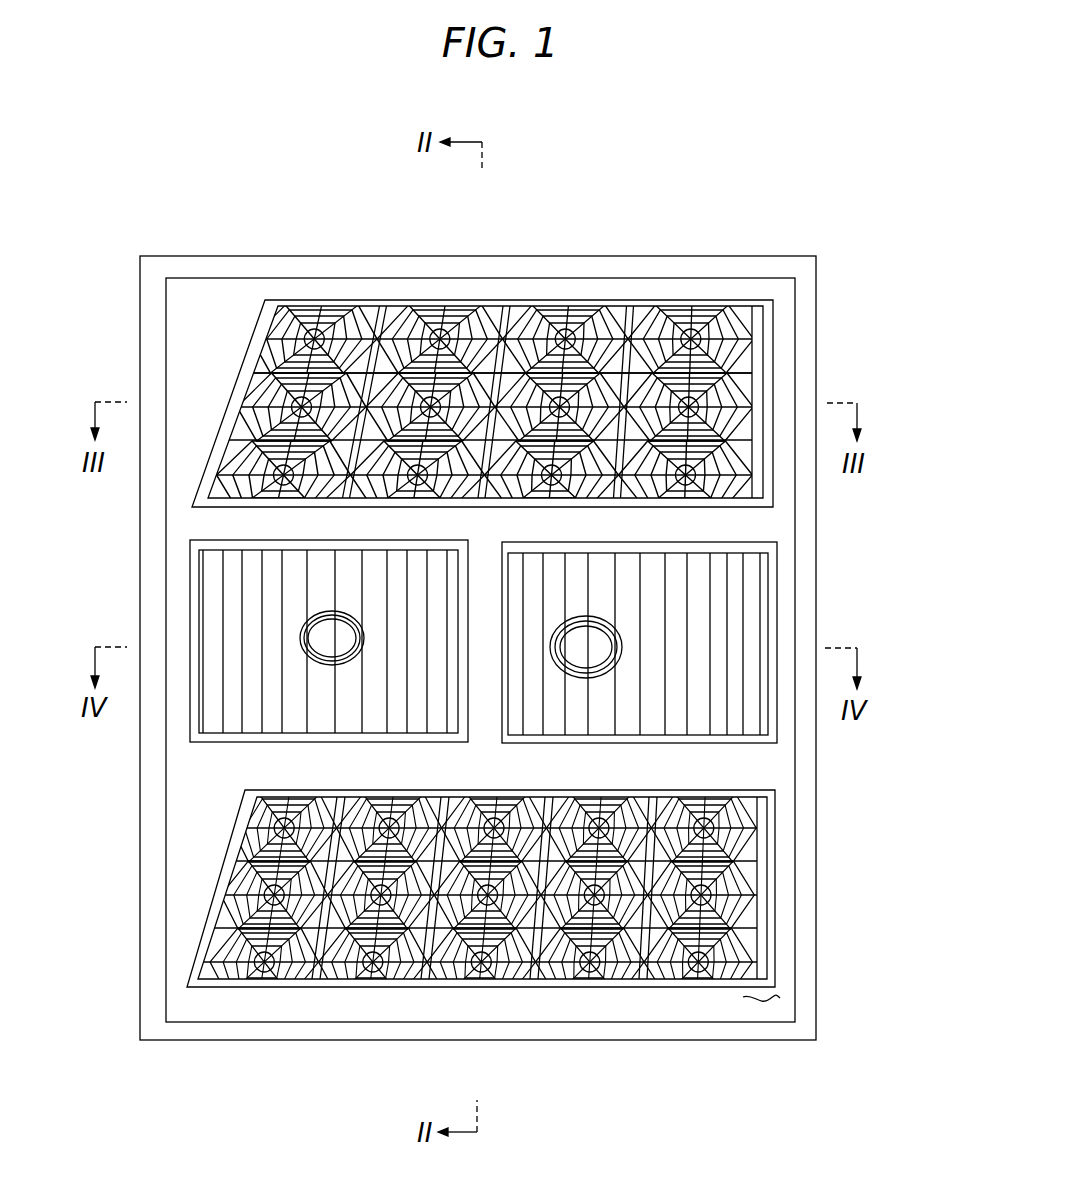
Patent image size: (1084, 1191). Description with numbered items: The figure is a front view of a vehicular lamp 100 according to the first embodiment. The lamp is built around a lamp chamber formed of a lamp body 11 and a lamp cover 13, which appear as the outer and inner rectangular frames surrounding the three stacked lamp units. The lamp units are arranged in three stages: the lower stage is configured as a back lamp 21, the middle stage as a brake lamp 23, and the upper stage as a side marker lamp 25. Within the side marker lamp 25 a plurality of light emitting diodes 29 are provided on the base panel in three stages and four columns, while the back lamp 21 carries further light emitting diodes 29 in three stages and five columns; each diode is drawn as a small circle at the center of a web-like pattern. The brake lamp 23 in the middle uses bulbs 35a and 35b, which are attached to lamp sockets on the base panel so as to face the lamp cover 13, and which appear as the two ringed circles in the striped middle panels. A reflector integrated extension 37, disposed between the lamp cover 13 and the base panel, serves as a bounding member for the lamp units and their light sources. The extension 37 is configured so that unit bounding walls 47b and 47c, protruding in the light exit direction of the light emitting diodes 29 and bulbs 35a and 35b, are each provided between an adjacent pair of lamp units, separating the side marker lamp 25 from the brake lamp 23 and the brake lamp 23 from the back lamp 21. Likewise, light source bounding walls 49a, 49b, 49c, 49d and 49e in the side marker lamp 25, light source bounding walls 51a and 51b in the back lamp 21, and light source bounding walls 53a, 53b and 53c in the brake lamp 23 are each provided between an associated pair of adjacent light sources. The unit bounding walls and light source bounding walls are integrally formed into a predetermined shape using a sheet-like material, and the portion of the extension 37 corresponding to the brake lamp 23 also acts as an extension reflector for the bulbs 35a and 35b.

The vehicular lamp 100 is at (822, 228).
The lamp body 11 is at (590, 1052).
The lamp cover 13 is at (806, 918).
The back lamp 21 is at (788, 873).
The brake lamp 23 is at (778, 756).
The side marker lamp 25 is at (786, 343).
The light emitting diodes 29 is at (313, 335).
The bulb 35a is at (323, 632).
The bulb 35b is at (588, 647).
The reflector integrated extension 37 is at (767, 1003).
The unit bounding wall 47b is at (725, 524).
The unit bounding wall 47c is at (710, 755).
The light source bounding wall 49a is at (393, 327).
The light source bounding wall 49b is at (577, 333).
The light source bounding wall 49c is at (363, 330).
The light source bounding wall 49d is at (503, 312).
The light source bounding wall 49e is at (628, 320).
The light source bounding wall 51a is at (504, 972).
The light source bounding wall 51b is at (308, 962).
The light source bounding wall 53a is at (190, 625).
The light source bounding wall 53b is at (482, 627).
The light source bounding wall 53c is at (775, 698).